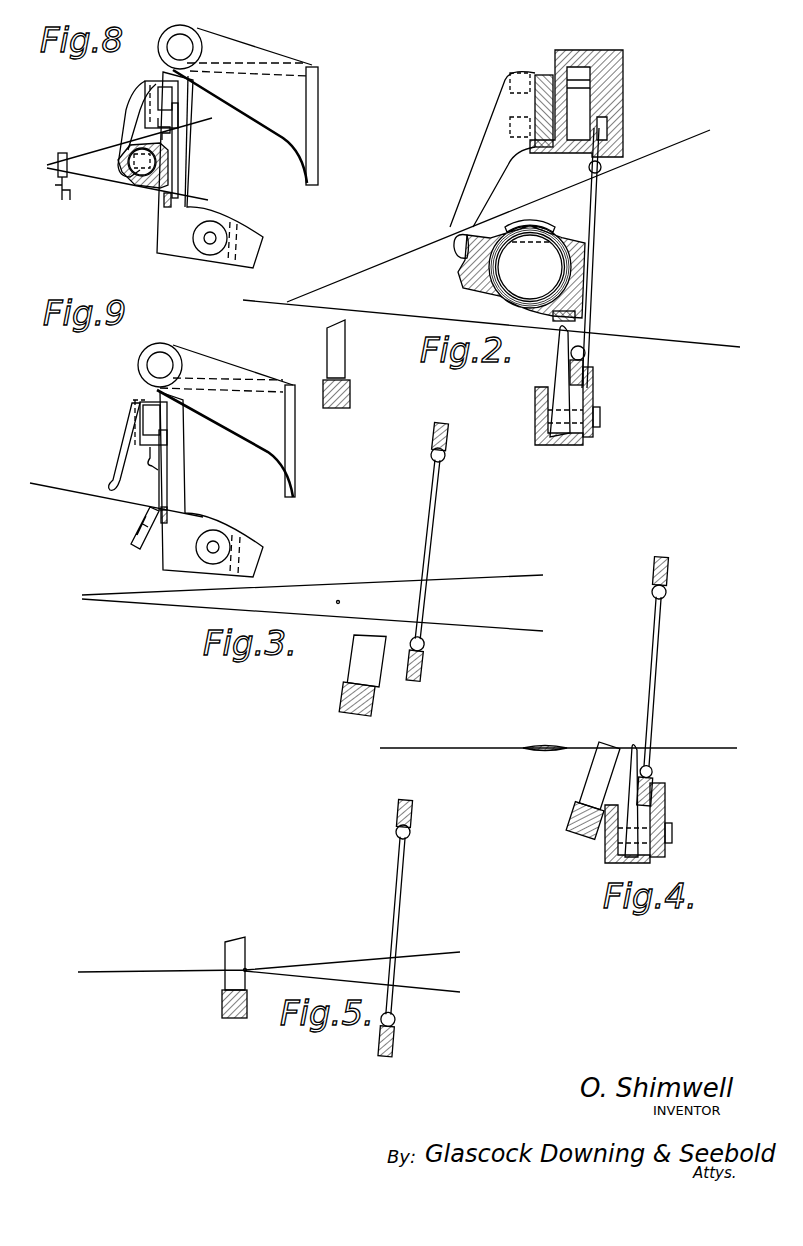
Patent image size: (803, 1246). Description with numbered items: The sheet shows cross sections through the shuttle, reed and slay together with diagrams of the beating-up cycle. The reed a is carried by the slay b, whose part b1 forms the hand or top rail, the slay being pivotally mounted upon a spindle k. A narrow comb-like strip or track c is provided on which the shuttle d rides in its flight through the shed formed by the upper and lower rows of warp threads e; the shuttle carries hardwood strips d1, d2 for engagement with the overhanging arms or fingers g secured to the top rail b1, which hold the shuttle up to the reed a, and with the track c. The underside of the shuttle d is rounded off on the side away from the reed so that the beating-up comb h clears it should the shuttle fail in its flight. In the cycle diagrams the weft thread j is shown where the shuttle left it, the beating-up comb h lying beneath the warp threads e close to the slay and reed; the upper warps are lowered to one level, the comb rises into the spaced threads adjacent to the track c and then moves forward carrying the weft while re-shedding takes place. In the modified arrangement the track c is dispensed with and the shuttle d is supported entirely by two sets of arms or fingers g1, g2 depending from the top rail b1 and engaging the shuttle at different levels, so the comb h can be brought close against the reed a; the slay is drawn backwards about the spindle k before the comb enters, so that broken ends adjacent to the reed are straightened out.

In FIG. 8, the reed a is at (173, 153).
In FIG. 9, the reed a is at (161, 495).
In FIG. 2, the reed a is at (600, 211).
In FIG. 3, the reed a is at (432, 517).
In FIG. 4, the reed a is at (652, 672).
In FIG. 5, the reed a is at (407, 908).
In FIG. 8, the slay b is at (210, 170).
In FIG. 9, the slay b is at (211, 484).
In FIG. 2, the slay b is at (582, 440).
In FIG. 4, the slay b is at (643, 862).
In FIG. 8, the hand or top rail b1 is at (163, 88).
In FIG. 9, the hand or top rail b1 is at (147, 403).
In FIG. 2, the hand or top rail b1 is at (623, 73).
In FIG. 2, the narrow strip or track c is at (557, 363).
In FIG. 4, the narrow strip or track c is at (650, 760).
In FIG. 8, the shuttle d is at (140, 176).
In FIG. 2, the hardwood strip d1 is at (462, 233).
In FIG. 2, the hardwood strip d2 is at (577, 316).
In FIG. 8, the warp threads e is at (129, 159).
In FIG. 9, the warp threads e is at (116, 492).
In FIG. 2, the warp threads e is at (682, 140).
In FIG. 3, the warp threads e is at (470, 600).
In FIG. 4, the warp threads e is at (507, 750).
In FIG. 5, the warp threads e is at (315, 977).
In FIG. 2, the overhanging arms or fingers g is at (490, 153).
In FIG. 8, the arms or fingers g1 is at (138, 110).
In FIG. 9, the arms or fingers g1 is at (130, 427).
In FIG. 8, the arms or fingers g2 is at (157, 137).
In FIG. 9, the arms or fingers g2 is at (146, 471).
In FIG. 8, the beating-up comb h is at (62, 153).
In FIG. 9, the beating-up comb h is at (145, 512).
In FIG. 2, the beating-up comb h is at (345, 352).
In FIG. 3, the beating-up comb h is at (362, 656).
In FIG. 4, the beating-up comb h is at (598, 775).
In FIG. 5, the beating-up comb h is at (243, 938).
In FIG. 3, the weft thread j is at (339, 600).
In FIG. 5, the weft thread j is at (225, 972).
In FIG. 8, the spindle k is at (180, 47).
In FIG. 9, the spindle k is at (160, 365).